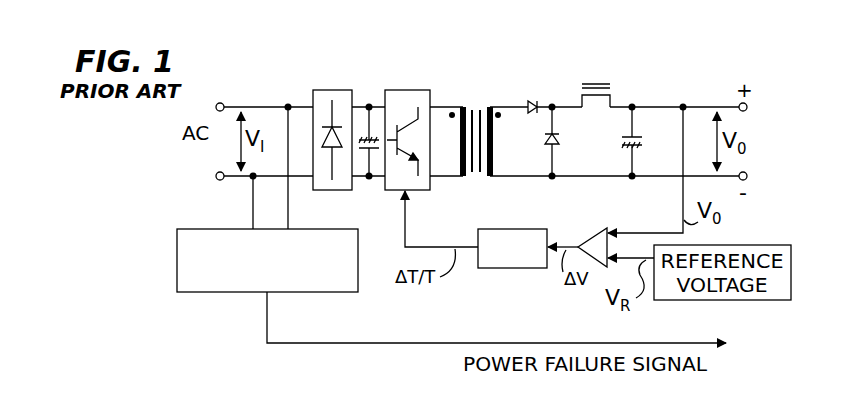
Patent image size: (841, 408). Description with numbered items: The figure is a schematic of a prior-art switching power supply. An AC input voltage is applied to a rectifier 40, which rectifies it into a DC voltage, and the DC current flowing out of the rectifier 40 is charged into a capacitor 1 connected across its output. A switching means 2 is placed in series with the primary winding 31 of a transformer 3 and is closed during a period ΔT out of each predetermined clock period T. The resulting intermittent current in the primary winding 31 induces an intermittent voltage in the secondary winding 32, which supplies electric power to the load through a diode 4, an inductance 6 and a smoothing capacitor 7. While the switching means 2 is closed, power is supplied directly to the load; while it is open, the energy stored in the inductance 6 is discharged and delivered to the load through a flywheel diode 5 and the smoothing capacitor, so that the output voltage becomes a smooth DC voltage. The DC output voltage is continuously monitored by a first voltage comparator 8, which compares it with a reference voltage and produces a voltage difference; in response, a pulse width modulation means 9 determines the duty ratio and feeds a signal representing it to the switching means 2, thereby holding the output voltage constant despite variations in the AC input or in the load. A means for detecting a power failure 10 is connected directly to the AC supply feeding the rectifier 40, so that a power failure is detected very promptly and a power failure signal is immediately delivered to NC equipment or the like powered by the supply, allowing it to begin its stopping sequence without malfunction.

The capacitor 1 is at (375, 155).
The switching means 2 is at (412, 90).
The transformer 3 is at (473, 138).
The primary winding 31 is at (459, 180).
The secondary winding 32 is at (485, 177).
The diode 4 is at (533, 100).
The flywheel diode 5 is at (560, 140).
The inductance 6 is at (605, 85).
The smoothing capacitor 7 is at (642, 138).
The first voltage comparator 8 is at (598, 234).
The pulse width modulation means 9 is at (506, 229).
The means for detecting a power failure 10 is at (300, 293).
The rectifier 40 is at (323, 90).